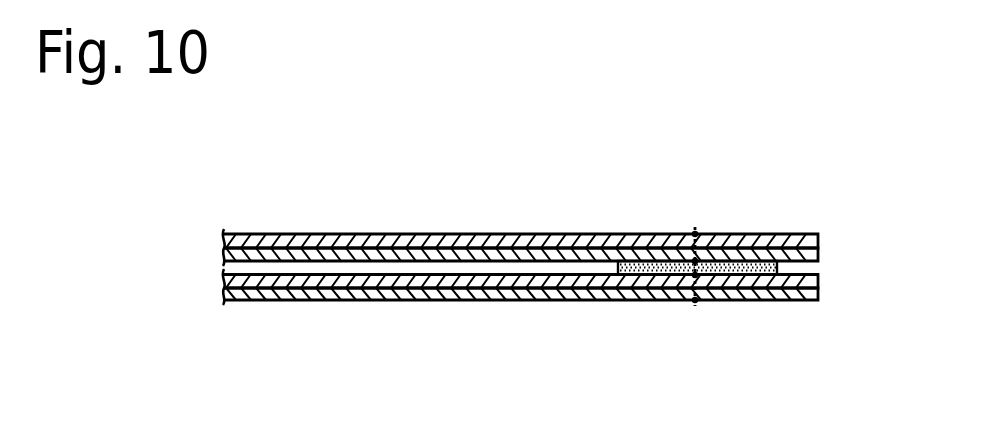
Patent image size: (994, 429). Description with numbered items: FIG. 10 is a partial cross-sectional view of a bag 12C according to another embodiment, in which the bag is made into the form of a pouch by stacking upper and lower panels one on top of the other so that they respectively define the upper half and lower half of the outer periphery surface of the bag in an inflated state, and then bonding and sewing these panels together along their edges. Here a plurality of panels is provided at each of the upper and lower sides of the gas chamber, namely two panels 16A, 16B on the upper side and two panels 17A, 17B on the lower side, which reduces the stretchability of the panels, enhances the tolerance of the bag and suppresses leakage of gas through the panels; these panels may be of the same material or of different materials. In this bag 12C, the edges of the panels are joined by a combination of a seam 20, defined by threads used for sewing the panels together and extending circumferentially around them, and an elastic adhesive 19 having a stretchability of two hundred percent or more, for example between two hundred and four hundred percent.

The bag 12C is at (523, 173).
The panel 16A is at (805, 234).
The panel 16B is at (820, 256).
The panel 17A is at (785, 300).
The panel 17B is at (820, 280).
The elastic adhesive 19 is at (778, 268).
The seam 20 is at (695, 230).